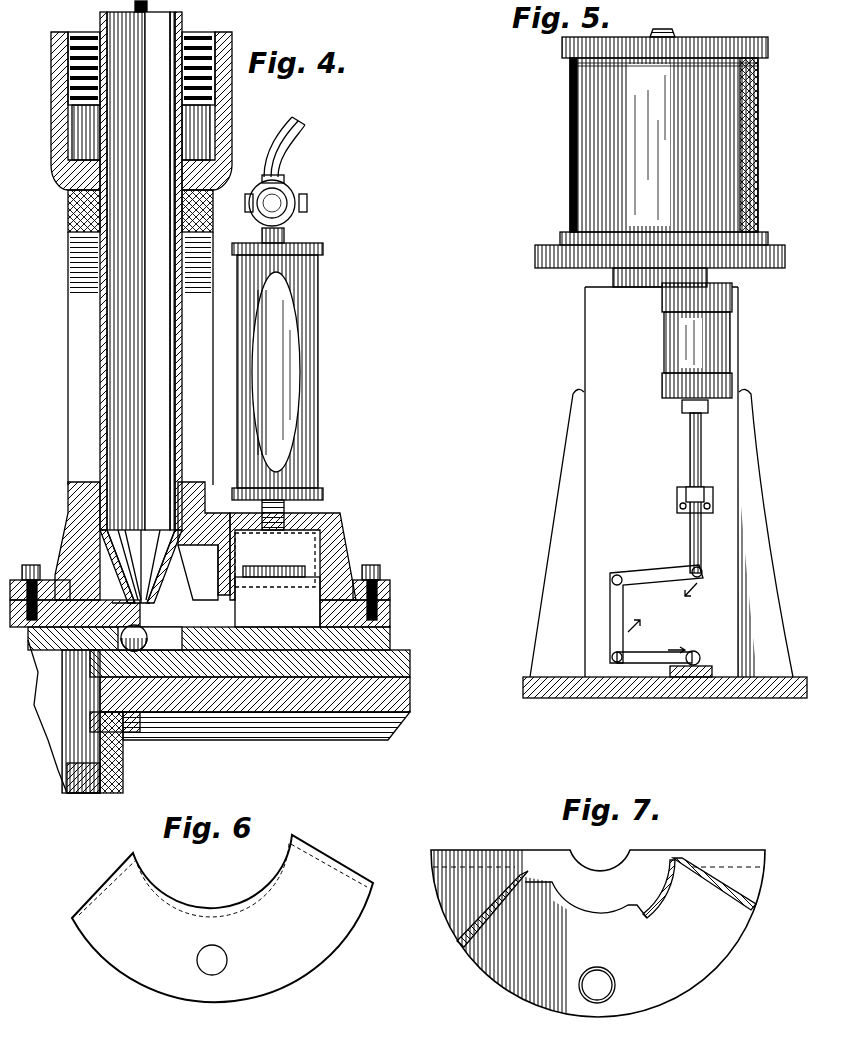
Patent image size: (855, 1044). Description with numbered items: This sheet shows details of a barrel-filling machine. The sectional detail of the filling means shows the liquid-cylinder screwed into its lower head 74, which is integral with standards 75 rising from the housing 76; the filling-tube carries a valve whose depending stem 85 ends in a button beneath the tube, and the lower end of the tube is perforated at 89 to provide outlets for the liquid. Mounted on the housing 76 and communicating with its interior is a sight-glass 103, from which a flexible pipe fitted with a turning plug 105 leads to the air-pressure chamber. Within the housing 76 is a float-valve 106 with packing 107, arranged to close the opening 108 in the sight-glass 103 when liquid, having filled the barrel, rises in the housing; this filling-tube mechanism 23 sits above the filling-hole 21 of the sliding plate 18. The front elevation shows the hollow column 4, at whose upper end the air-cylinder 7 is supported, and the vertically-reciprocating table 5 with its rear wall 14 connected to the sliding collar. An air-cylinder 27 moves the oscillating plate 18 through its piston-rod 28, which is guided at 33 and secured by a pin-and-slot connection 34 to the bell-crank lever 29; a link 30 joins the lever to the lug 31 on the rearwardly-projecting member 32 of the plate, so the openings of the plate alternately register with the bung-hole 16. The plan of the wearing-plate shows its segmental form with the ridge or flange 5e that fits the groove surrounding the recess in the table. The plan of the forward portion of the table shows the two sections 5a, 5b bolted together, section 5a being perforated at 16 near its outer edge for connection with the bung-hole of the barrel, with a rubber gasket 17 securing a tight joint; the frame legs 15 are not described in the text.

In FIG. 5, the hollow column 4 is at (612, 280).
In FIG. 4, the table 5 is at (405, 697).
In FIG. 7, the table section 5a is at (522, 873).
In FIG. 7, the table section 5b is at (725, 937).
In FIG. 6, the ridge or flange 5e is at (313, 846).
In FIG. 5, the air-cylinder 7 is at (570, 150).
In FIG. 5, the rear wall 14 is at (665, 492).
In FIG. 5, the frame legs 15 is at (562, 580).
In FIG. 4, the bung-hole 16 is at (80, 690).
In FIG. 7, the bung-hole 16 is at (616, 992).
In FIG. 4, the gasket 17 is at (123, 775).
In FIG. 4, the sliding plate 18 is at (390, 618).
In FIG. 4, the filling-hole 21 is at (352, 575).
In FIG. 4, the filling-tube mechanism 23 is at (120, 211).
In FIG. 5, the air-cylinder 27 is at (732, 335).
In FIG. 5, the piston-rod 28 is at (700, 475).
In FIG. 5, the bell-crank lever 29 is at (641, 574).
In FIG. 5, the link 30 is at (665, 655).
In FIG. 5, the lug 31 is at (699, 656).
In FIG. 5, the rearwardly-projecting member 32 is at (670, 672).
In FIG. 5, the guide 33 is at (677, 496).
In FIG. 5, the pin-and-slot connection 34 is at (700, 595).
In FIG. 4, the lower head 74 is at (51, 130).
In FIG. 4, the standards 75 is at (73, 394).
In FIG. 4, the housing 76 is at (58, 530).
In FIG. 4, the depending stem 85 is at (150, 310).
In FIG. 4, the perforations 89 is at (160, 566).
In FIG. 4, the sight-glass 103 is at (300, 374).
In FIG. 4, the turning plug 105 is at (295, 200).
In FIG. 4, the float-valve 106 is at (277, 602).
In FIG. 4, the packing 107 is at (279, 562).
In FIG. 4, the opening 108 is at (275, 560).